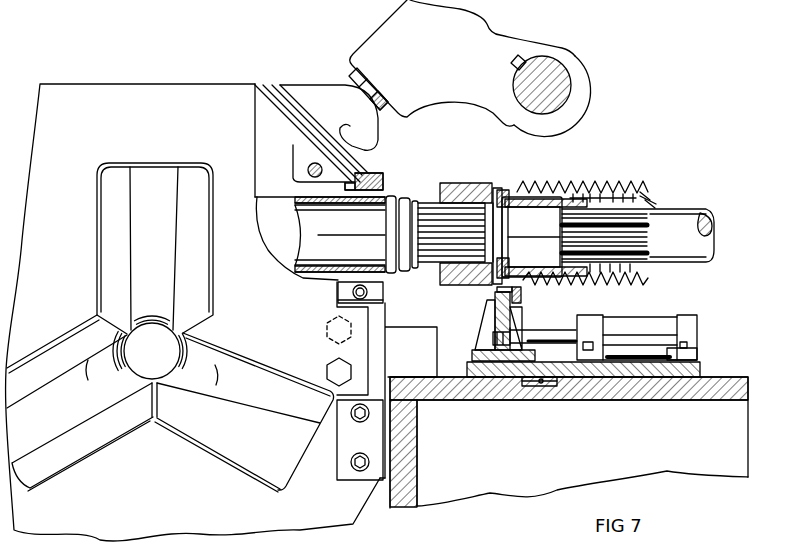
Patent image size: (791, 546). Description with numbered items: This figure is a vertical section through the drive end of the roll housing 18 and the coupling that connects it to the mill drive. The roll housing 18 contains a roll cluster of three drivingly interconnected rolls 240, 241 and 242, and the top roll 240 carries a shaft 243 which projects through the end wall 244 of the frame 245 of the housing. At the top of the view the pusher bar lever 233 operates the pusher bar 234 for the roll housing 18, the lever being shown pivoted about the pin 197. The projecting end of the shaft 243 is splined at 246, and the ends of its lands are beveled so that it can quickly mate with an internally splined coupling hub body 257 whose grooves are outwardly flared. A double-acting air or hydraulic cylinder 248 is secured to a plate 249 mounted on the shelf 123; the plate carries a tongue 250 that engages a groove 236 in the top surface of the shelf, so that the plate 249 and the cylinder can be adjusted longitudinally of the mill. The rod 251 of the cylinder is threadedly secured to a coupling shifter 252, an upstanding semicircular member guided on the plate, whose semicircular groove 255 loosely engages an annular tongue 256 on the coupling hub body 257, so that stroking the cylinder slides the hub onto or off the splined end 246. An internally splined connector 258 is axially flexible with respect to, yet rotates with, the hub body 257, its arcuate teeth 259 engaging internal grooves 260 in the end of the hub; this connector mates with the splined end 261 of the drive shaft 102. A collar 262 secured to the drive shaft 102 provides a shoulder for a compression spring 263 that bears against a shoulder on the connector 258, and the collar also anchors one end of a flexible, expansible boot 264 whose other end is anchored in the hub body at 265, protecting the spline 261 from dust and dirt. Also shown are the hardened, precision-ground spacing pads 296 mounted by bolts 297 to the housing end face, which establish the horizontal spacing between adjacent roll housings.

The roll housing 18 is at (163, 80).
The drive shaft 102 is at (688, 218).
The shelf 123 is at (573, 402).
The pivot pin 197 is at (565, 88).
The pusher bar lever 233 is at (500, 40).
The pusher bar 234 is at (383, 100).
The groove 236 is at (546, 387).
The top roll 240 is at (207, 296).
The roll 241 is at (110, 436).
The roll 242 is at (250, 472).
The shaft 243 is at (292, 279).
The end wall 244 is at (390, 296).
The frame 245 is at (277, 95).
The splined end 246 is at (437, 208).
The double-acting air or hydraulic cylinder 248 is at (667, 316).
The plate 249 is at (700, 372).
The tongue 250 is at (528, 388).
The rod 251 is at (534, 368).
The coupling shifter 252 is at (492, 308).
The semicircular groove 255 is at (517, 296).
The annular tongue 256 is at (499, 186).
The internally splined coupling hub body 257 is at (465, 184).
The internally splined connector 258 is at (572, 190).
The arcuate teeth 259 is at (544, 237).
The internal grooves 260 is at (534, 249).
The splined end 261 is at (652, 238).
The collar 262 is at (652, 204).
The compression spring 263 is at (642, 278).
The flexible, expansible boot 264 is at (622, 190).
The boot anchor 265 is at (540, 186).
The spacing pads 296 is at (378, 482).
The bolts 297 is at (358, 478).